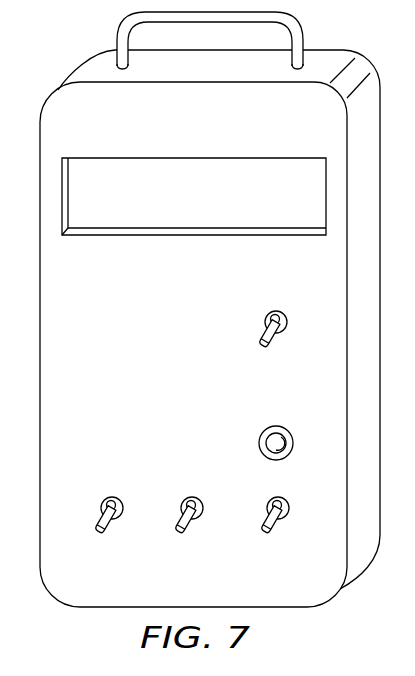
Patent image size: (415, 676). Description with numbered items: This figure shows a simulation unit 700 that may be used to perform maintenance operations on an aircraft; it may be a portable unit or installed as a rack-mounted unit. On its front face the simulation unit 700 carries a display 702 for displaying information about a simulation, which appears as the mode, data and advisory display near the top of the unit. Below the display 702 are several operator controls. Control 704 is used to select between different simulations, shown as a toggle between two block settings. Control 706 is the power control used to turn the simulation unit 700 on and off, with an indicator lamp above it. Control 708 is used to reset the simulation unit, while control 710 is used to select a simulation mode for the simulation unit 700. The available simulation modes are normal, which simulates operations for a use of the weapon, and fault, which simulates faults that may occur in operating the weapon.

The simulation unit 700 is at (75, 70).
The display 702 is at (230, 172).
The control 704 is at (259, 337).
The control 706 is at (256, 538).
The control 708 is at (178, 538).
The control 710 is at (98, 538).